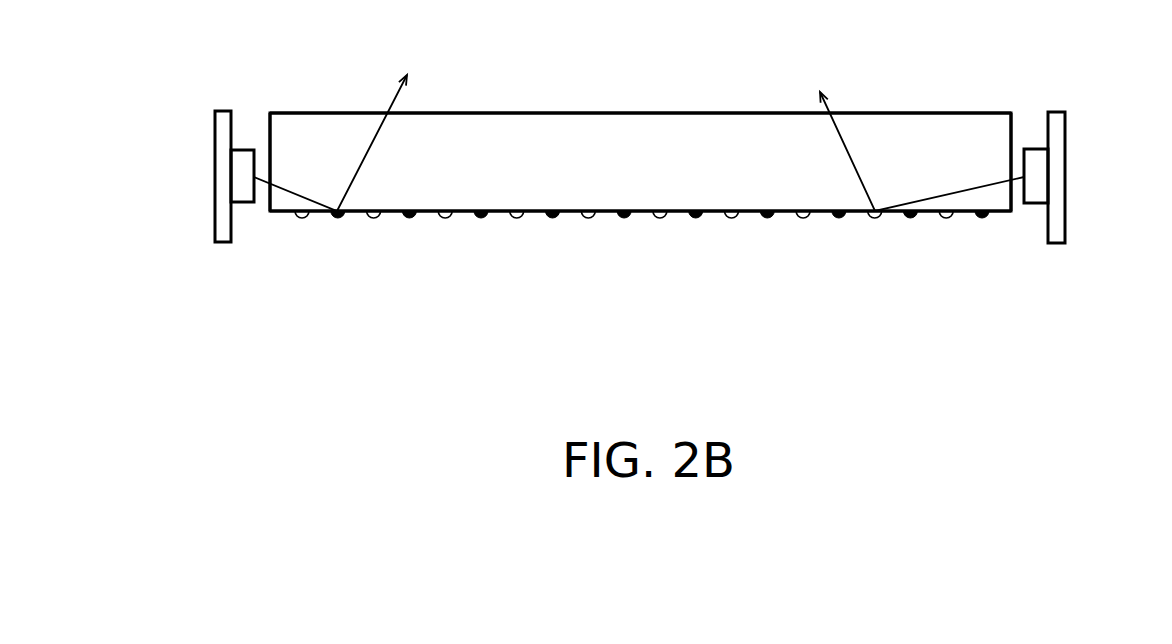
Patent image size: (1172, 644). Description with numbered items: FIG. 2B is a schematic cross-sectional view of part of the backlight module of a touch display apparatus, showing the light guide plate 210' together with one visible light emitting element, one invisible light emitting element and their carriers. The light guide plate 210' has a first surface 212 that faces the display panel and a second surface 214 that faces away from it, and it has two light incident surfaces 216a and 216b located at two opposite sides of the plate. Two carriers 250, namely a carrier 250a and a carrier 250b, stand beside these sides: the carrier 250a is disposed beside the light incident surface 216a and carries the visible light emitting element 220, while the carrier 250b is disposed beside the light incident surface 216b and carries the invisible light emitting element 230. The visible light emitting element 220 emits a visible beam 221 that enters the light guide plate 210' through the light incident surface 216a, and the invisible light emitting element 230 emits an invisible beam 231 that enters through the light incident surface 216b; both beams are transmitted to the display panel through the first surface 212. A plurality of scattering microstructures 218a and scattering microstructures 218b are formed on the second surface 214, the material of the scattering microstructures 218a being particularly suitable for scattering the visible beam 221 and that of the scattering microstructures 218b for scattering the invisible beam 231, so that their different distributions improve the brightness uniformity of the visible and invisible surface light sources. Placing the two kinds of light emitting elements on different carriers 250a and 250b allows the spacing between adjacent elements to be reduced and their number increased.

The light guide plate 210' is at (640, 230).
The first surface 212 is at (752, 110).
The second surface 214 is at (715, 214).
The light incident surface 216a is at (1015, 119).
The light incident surface 216b is at (265, 124).
The scattering microstructures 218a is at (588, 218).
The scattering microstructures 218b is at (552, 218).
The visible light emitting element 220 is at (1037, 197).
The invisible light emitting element 230 is at (247, 190).
The visible beam 221 is at (936, 197).
The invisible beam 231 is at (290, 190).
The carriers 250 is at (636, 233).
The carrier 250a is at (1057, 220).
The carrier 250b is at (222, 184).